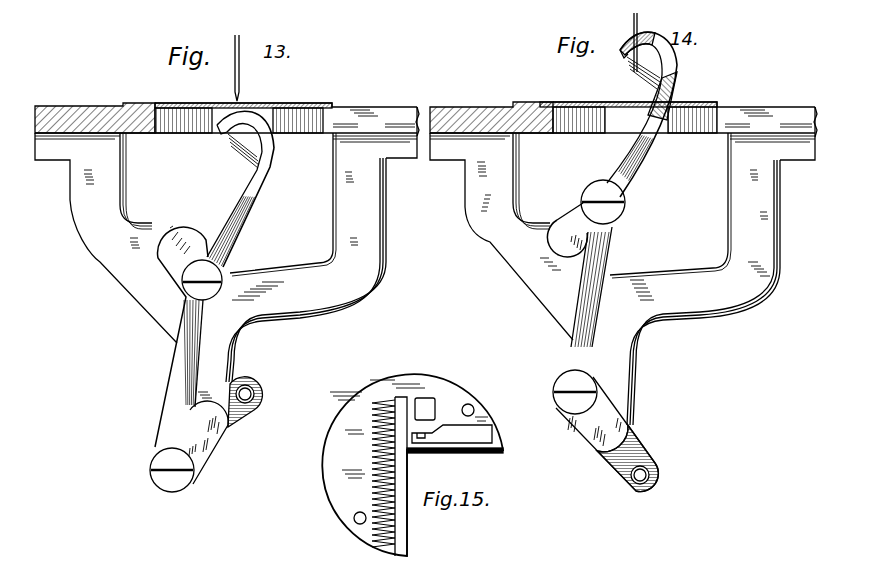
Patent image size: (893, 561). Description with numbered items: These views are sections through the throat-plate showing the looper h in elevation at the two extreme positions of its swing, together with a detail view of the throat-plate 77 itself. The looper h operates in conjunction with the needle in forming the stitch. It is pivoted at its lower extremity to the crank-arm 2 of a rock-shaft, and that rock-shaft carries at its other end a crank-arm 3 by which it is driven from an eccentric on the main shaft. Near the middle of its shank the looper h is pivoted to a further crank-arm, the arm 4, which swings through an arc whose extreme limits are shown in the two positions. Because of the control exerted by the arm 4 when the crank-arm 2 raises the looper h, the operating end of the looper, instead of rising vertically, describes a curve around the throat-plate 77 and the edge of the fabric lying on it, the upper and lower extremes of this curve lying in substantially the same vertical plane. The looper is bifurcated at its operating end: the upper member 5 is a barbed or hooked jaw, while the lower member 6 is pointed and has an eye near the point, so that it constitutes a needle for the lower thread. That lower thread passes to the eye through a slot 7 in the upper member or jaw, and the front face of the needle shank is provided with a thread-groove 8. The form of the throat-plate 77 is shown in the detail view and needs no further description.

In FIG. 13, the crank-arm 2 is at (202, 453).
In FIG. 14, the crank-arm 2 is at (583, 435).
In FIG. 13, the crank-arm 3 is at (243, 420).
In FIG. 14, the crank-arm 3 is at (650, 461).
In FIG. 13, the arm 4 is at (175, 233).
In FIG. 14, the arm 4 is at (557, 233).
In FIG. 13, the upper member 5 is at (258, 126).
In FIG. 14, the upper member 5 is at (630, 38).
In FIG. 13, the lower member 6 is at (243, 152).
In FIG. 14, the lower member 6 is at (642, 73).
In FIG. 14, the slot 7 is at (672, 60).
In FIG. 13, the thread-groove 8 is at (227, 140).
In FIG. 14, the thread-groove 8 is at (630, 60).
In FIG. 13, the looper h is at (251, 212).
In FIG. 14, the looper h is at (625, 152).
In FIG. 15, the throat-plate 77 is at (335, 444).